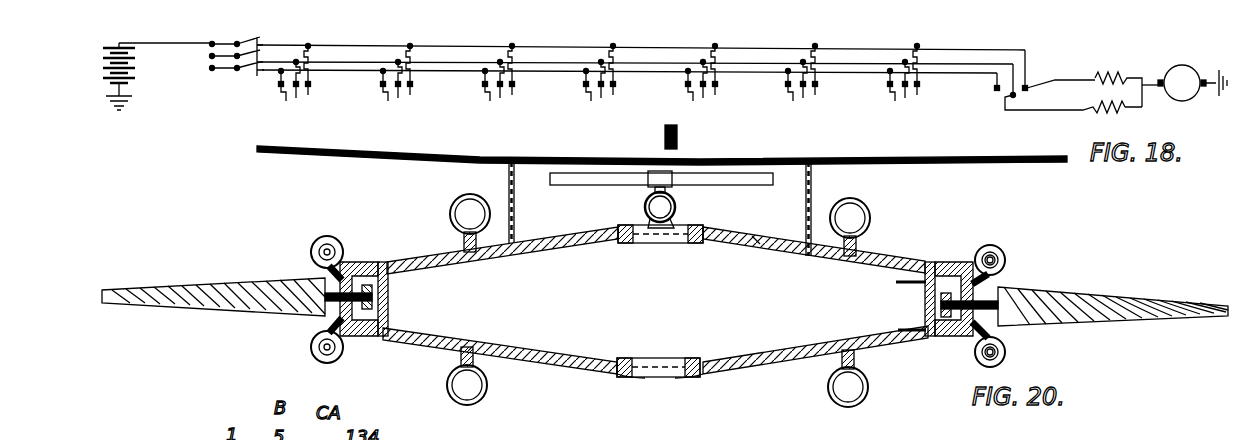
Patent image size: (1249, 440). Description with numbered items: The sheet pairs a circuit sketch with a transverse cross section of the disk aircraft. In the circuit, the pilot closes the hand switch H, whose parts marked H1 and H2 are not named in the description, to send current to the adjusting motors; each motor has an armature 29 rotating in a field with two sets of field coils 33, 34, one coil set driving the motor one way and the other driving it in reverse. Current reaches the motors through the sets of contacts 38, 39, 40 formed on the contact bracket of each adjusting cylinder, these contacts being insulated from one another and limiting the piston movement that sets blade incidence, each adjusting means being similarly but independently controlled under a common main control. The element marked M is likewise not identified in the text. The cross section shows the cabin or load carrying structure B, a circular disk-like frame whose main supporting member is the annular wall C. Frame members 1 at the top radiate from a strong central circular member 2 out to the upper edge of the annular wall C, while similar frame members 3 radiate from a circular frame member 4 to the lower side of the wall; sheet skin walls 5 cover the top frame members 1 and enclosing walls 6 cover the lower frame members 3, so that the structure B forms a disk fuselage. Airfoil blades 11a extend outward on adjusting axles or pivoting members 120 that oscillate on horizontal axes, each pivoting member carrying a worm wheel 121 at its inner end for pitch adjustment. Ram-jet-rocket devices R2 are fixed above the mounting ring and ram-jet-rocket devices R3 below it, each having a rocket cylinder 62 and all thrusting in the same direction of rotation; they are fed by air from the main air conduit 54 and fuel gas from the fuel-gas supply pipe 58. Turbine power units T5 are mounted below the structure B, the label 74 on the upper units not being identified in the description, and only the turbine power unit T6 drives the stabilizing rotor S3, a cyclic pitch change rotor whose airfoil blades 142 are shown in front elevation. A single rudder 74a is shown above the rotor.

In FIG. 18, the hand switch H is at (262, 74).
In FIG. 18, the switch blades H1 is at (257, 50).
In FIG. 18, the switch pivot H2 is at (263, 76).
In FIG. 18, the contact 38 is at (383, 90).
In FIG. 18, the contact 39 is at (296, 90).
In FIG. 18, the contact 40 is at (312, 80).
In FIG. 18, the field coil 34 is at (1105, 70).
In FIG. 18, the field coil 33 is at (1095, 112).
In FIG. 18, the armature 29 is at (1185, 102).
In FIG. 20, the cross bar M is at (557, 154).
In FIG. 20, the rudder 74a is at (680, 133).
In FIG. 20, the airfoil blades 142 is at (557, 187).
In FIG. 20, the stabilizing rotor S3 is at (610, 187).
In FIG. 20, the turbine power unit T6 is at (676, 211).
In FIG. 20, the frame members 1 is at (505, 258).
In FIG. 20, the central circular member 2 is at (698, 252).
In FIG. 20, the frame members 3 is at (556, 350).
In FIG. 20, the circular frame member 4 is at (700, 356).
In FIG. 20, the surface metal enclosing walls 6 is at (580, 370).
In FIG. 20, the load carrying structure B is at (726, 378).
In FIG. 20, the sheet skin enclosing walls 5 is at (756, 240).
In FIG. 20, the upper tie ring 74 is at (452, 226).
In FIG. 20, the turbine power units T5 is at (488, 392).
In FIG. 20, the annular wall C is at (370, 334).
In FIG. 20, the worm wheel 121 is at (380, 322).
In FIG. 20, the pivoting member 120 is at (352, 270).
In FIG. 20, the ram-jet-rocket devices R2 is at (312, 250).
In FIG. 20, the ram-jet-rocket devices R3 is at (312, 348).
In FIG. 20, the rocket cylinder 62 is at (1006, 264).
In FIG. 20, the fuel-gas supply pipe 58 is at (894, 282).
In FIG. 20, the main air conduit 54 is at (896, 330).
In FIG. 20, the airfoil blades 11a is at (172, 290).